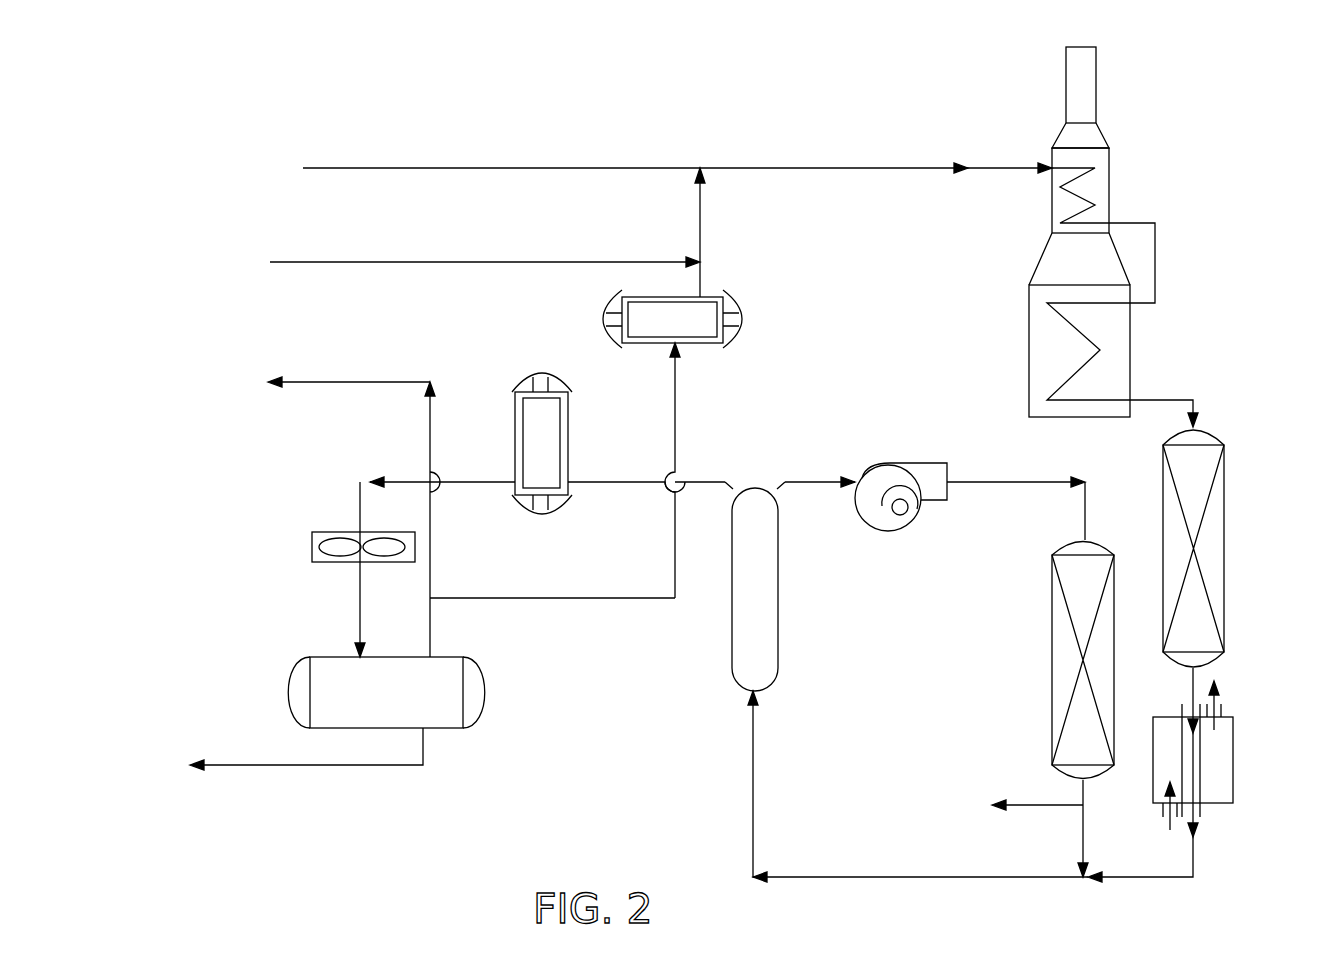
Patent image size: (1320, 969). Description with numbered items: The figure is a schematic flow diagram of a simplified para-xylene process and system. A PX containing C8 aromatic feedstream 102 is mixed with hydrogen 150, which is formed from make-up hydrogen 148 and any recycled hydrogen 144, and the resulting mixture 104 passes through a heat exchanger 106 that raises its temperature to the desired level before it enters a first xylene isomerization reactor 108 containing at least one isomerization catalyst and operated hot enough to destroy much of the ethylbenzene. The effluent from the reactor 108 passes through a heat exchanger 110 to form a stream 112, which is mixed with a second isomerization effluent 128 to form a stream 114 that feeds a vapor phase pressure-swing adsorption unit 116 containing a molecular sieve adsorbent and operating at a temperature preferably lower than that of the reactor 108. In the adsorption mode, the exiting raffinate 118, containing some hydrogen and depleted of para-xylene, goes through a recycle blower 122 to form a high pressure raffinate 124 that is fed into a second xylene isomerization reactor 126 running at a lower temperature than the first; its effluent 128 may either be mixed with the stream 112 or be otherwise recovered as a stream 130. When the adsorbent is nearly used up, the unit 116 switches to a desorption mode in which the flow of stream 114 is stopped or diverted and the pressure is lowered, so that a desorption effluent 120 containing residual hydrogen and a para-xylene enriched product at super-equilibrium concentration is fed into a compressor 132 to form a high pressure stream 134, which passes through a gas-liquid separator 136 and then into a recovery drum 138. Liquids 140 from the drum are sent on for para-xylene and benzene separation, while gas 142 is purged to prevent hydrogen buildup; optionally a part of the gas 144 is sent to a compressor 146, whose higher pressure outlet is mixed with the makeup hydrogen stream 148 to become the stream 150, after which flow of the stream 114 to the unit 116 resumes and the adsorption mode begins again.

The PX containing C8 aromatic feedstream 102 is at (552, 168).
The mixture 104 is at (798, 168).
The heat exchanger 106 is at (1155, 260).
The first xylene isomerization reactor 108 is at (1224, 518).
The heat exchanger 110 is at (1233, 752).
The stream 112 is at (1160, 877).
The stream 114 is at (800, 877).
The vapor phase pressure-swing adsorption unit 116 is at (780, 569).
The raffinate 118 is at (785, 482).
The desorption effluent 120 is at (710, 480).
The recycle blower 122 is at (918, 518).
The high pressure raffinate 124 is at (990, 482).
The second xylene isomerization reactor 126 is at (1052, 691).
The second isomerization effluent 128 is at (1083, 826).
The stream 130 is at (1050, 803).
The compressor 132 is at (568, 443).
The high pressure stream 134 is at (495, 478).
The gas-liquid separator 136 is at (397, 533).
The recovery drum 138 is at (407, 703).
The liquids 140 is at (291, 764).
The gas 142 is at (435, 420).
The gas 144 is at (600, 595).
The compressor 146 is at (611, 297).
The makeup hydrogen stream 148 is at (572, 262).
The hydrogen 150 is at (703, 224).